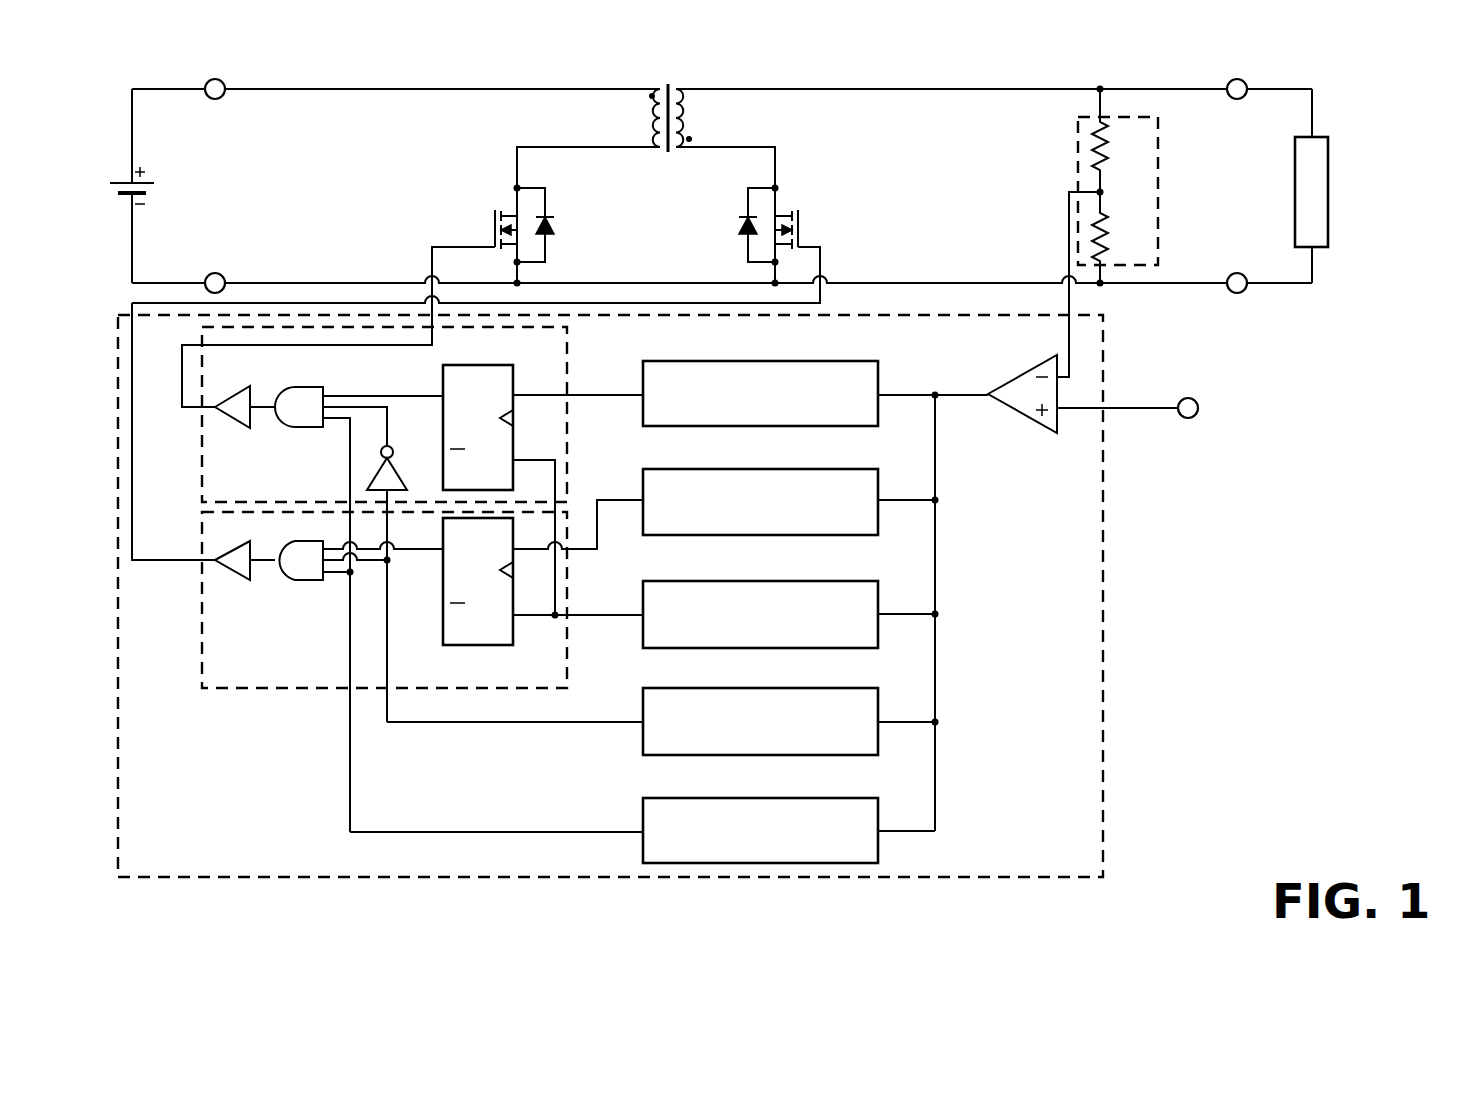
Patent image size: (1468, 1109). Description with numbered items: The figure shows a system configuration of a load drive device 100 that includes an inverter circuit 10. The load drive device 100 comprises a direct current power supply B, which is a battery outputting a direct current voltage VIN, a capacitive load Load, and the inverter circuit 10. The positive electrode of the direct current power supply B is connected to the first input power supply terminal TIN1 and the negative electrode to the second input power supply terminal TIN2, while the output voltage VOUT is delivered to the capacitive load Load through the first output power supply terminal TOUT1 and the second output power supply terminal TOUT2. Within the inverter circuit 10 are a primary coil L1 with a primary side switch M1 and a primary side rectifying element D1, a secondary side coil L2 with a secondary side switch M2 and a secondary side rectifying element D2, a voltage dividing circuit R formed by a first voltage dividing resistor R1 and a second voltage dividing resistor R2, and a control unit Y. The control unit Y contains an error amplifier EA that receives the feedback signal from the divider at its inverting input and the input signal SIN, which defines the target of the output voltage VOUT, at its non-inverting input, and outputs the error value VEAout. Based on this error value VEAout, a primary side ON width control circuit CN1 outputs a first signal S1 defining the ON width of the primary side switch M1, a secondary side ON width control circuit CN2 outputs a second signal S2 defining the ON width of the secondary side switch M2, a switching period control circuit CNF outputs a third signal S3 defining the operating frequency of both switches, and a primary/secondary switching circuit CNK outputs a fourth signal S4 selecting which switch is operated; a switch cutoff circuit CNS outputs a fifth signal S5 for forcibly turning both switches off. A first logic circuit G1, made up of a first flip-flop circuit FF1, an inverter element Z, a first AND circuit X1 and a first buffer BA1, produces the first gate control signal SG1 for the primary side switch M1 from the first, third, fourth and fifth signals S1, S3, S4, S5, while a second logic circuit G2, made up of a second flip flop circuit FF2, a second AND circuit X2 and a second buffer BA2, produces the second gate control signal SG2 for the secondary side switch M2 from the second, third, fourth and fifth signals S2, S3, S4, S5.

The inverter circuit 10 is at (1322, 62).
The load drive device 100 is at (694, 922).
The direct current power supply B is at (146, 185).
The direct current voltage VIN is at (193, 187).
The output voltage VOUT is at (1255, 169).
The first input power supply terminal TIN1 is at (215, 75).
The second input power supply terminal TIN2 is at (215, 266).
The first output power supply terminal TOUT1 is at (1233, 74).
The second output power supply terminal TOUT2 is at (1233, 297).
The primary coil L1 is at (592, 136).
The secondary side coil L2 is at (725, 138).
The primary side switch M1 is at (478, 236).
The secondary side switch M2 is at (814, 236).
The primary side rectifying element D1 is at (555, 225).
The secondary side rectifying element D2 is at (736, 225).
The voltage dividing circuit R is at (1092, 186).
The first voltage dividing resistor R1 is at (1120, 140).
The second voltage dividing resistor R2 is at (1120, 237).
The capacitive load Load is at (1330, 185).
The error amplifier EA is at (1020, 376).
The error value VEAout is at (933, 380).
The input signal SIN is at (1211, 408).
The control unit Y is at (1034, 613).
The primary side ON width control circuit CN1 is at (795, 360).
The secondary side ON width control circuit CN2 is at (795, 468).
The switching period control circuit CNF is at (795, 580).
The primary/secondary switching circuit CNK is at (795, 687).
The switch cutoff circuit CNS is at (795, 797).
The first signal S1 is at (605, 380).
The second signal S2 is at (620, 486).
The third signal S3 is at (605, 598).
The fourth signal S4 is at (515, 706).
The fifth signal S5 is at (496, 816).
The first logic circuit G1 is at (390, 579).
The second logic circuit G2 is at (387, 594).
The first gate control signal SG1 is at (176, 422).
The second gate control signal SG2 is at (173, 578).
The first buffer BA1 is at (237, 429).
The second buffer BA2 is at (237, 584).
The first AND circuit X1 is at (302, 429).
The second AND circuit X2 is at (302, 584).
The inverter element Z is at (396, 476).
The first flip-flop circuit FF1 is at (490, 365).
The second flip flop circuit FF2 is at (490, 645).